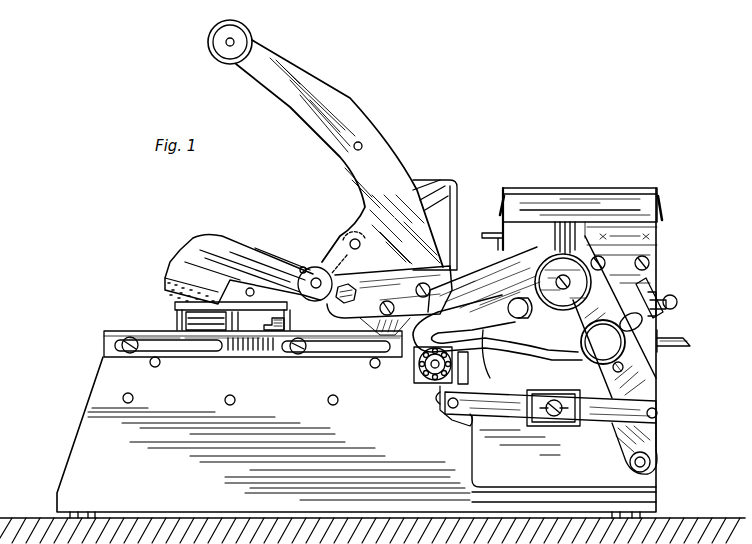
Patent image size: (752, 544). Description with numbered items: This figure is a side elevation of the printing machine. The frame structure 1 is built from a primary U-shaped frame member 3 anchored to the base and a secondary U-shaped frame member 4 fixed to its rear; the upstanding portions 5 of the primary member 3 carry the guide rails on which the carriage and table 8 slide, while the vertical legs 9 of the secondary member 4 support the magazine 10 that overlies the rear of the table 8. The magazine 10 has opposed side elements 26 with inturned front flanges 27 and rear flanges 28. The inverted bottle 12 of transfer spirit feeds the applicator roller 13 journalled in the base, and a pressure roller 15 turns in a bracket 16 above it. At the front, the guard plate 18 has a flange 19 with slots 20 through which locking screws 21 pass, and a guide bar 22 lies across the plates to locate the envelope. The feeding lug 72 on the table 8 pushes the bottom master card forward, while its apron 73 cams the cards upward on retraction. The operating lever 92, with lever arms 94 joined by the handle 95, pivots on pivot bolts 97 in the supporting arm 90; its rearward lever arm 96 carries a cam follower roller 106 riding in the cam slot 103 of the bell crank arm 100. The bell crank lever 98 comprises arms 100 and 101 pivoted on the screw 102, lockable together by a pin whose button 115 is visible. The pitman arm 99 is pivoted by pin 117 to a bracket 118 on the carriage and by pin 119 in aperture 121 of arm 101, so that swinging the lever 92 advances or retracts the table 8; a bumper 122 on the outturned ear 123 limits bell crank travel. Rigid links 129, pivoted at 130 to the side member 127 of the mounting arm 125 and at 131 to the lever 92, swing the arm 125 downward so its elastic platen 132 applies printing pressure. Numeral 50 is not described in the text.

The frame structure 1 is at (66, 436).
The primary U-shaped frame member 3 is at (74, 470).
The secondary U-shaped frame member 4 is at (668, 486).
The upstanding portions 5 is at (196, 490).
The table 8 is at (681, 347).
The legs 9 is at (530, 472).
The magazine 10 is at (669, 238).
The inverted bottle 12 is at (440, 193).
The applicator roller 13 is at (218, 352).
The pressure roller 15 is at (186, 320).
The bracket 16 is at (178, 305).
The guard plate 18 is at (118, 330).
The flange 19 is at (250, 355).
The slots 20 is at (192, 348).
The locking screws 21 is at (122, 350).
The guide bar 22 is at (270, 330).
The side elements 26 is at (560, 225).
The front flanges 27 is at (502, 200).
The rear flanges 28 is at (660, 212).
The bearing 50 is at (422, 380).
The feeding lug 72 is at (668, 340).
The apron 73 is at (685, 343).
The second supporting arm 90 is at (520, 262).
The operating lever 92 is at (364, 103).
The lever arms 94 is at (335, 140).
The operating handle 95 is at (206, 50).
The lever arm 96 is at (438, 282).
The pivot bolts 97 is at (316, 276).
The bell crank lever 98 is at (568, 250).
The pitman arm 99 is at (596, 422).
The bell crank arm 100 is at (518, 338).
The bell crank arm 101 is at (606, 362).
The screw 102 is at (570, 280).
The cam slot 103 is at (483, 332).
The cam follower roller 106 is at (516, 298).
The button 115 is at (622, 350).
The pin 117 is at (452, 410).
The bracket 118 is at (448, 395).
The pin 119 is at (660, 413).
The aperture 121 is at (652, 462).
The bumper 122 is at (655, 288).
The outturned ear 123 is at (672, 310).
The mounting arm 125 is at (196, 231).
The side member 127 is at (248, 256).
The rigid links 129 is at (306, 270).
The pivot 130 is at (302, 276).
The pivot 131 is at (352, 240).
The elastic platen 132 is at (170, 285).